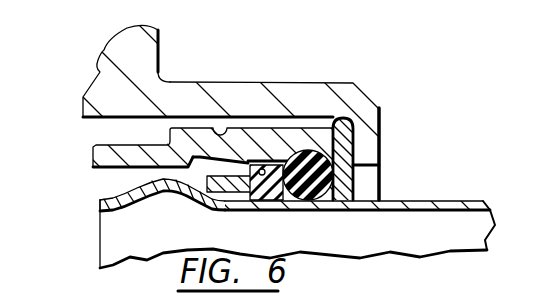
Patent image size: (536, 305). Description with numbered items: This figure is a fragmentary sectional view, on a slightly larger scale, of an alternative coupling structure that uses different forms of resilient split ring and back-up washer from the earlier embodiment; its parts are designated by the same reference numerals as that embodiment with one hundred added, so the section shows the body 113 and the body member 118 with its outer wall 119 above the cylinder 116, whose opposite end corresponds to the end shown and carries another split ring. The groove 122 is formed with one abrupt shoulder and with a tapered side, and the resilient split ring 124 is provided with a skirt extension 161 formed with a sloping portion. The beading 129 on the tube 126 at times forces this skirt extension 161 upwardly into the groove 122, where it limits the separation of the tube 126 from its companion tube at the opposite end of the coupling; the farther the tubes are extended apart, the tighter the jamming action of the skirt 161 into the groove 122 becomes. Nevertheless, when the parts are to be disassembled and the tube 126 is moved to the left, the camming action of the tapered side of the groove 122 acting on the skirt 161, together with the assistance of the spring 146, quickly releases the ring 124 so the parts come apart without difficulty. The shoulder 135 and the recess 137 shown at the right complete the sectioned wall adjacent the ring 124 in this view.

The housing body 113 is at (163, 40).
The cylinder 116 is at (103, 143).
The body member 118 is at (247, 97).
The outer flange wall 119 is at (376, 122).
The groove 122 is at (202, 155).
The resilient split ring 124 is at (281, 196).
The tube 126 is at (401, 215).
The beading 129 is at (173, 191).
The retaining ring 135 is at (351, 162).
The annular groove 137 is at (343, 192).
The spring 146 is at (259, 178).
The skirt extension 161 is at (218, 213).